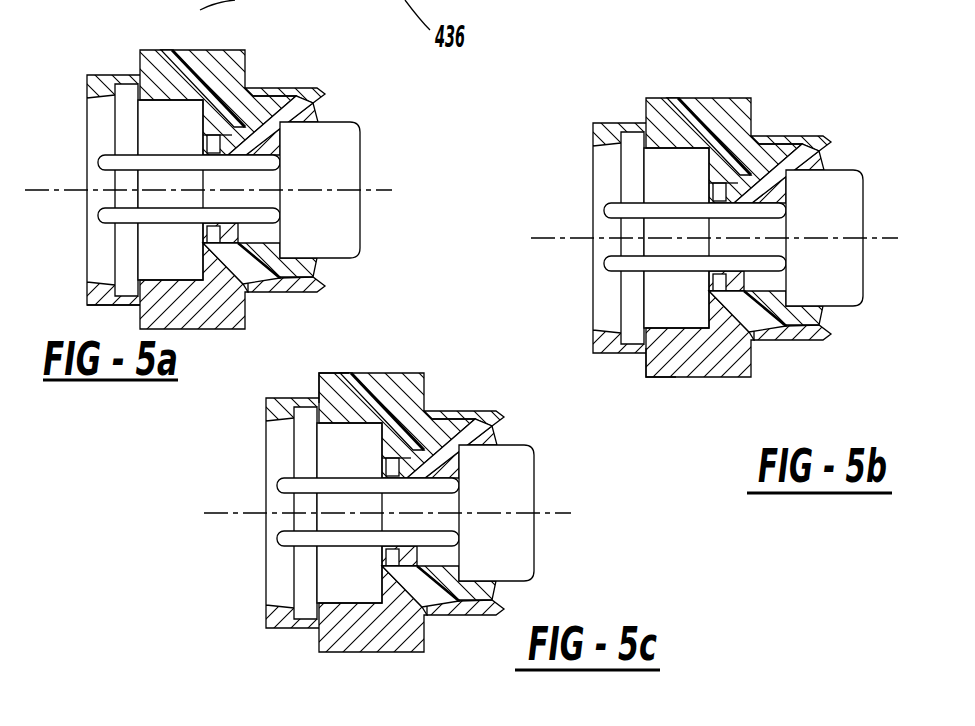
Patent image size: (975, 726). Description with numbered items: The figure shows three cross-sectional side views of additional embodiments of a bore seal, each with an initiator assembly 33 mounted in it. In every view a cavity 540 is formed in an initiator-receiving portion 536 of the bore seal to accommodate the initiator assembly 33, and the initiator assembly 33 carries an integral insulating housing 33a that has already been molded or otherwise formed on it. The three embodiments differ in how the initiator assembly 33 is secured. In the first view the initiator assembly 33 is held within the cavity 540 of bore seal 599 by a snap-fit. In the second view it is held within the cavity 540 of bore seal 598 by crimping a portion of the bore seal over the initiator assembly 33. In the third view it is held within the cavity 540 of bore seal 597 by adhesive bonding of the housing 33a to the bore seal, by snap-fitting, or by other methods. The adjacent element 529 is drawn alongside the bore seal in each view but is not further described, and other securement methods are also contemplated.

In FIG. 5A, the initiator assembly 33 is at (348, 147).
In FIG. 5B, the initiator assembly 33 is at (842, 190).
In FIG. 5C, the initiator assembly 33 is at (543, 499).
In FIG. 5A, the insulating housing 33a is at (296, 272).
In FIG. 5B, the insulating housing 33a is at (790, 189).
In FIG. 5C, the insulating housing 33a is at (488, 489).
In FIG. 5A, the housing 529 is at (100, 120).
In FIG. 5B, the housing 529 is at (611, 229).
In FIG. 5C, the housing 529 is at (284, 513).
In FIG. 5A, the initiator-receiving portion 536 is at (241, 88).
In FIG. 5B, the initiator-receiving portion 536 is at (778, 278).
In FIG. 5C, the initiator-receiving portion 536 is at (437, 545).
In FIG. 5A, the cavity 540 is at (182, 50).
In FIG. 5B, the cavity 540 is at (724, 193).
In FIG. 5C, the cavity 540 is at (410, 473).
In FIG. 5C, the bore seal 597 is at (264, 408).
In FIG. 5B, the bore seal 598 is at (683, 403).
In FIG. 5A, the bore seal 599 is at (140, 325).